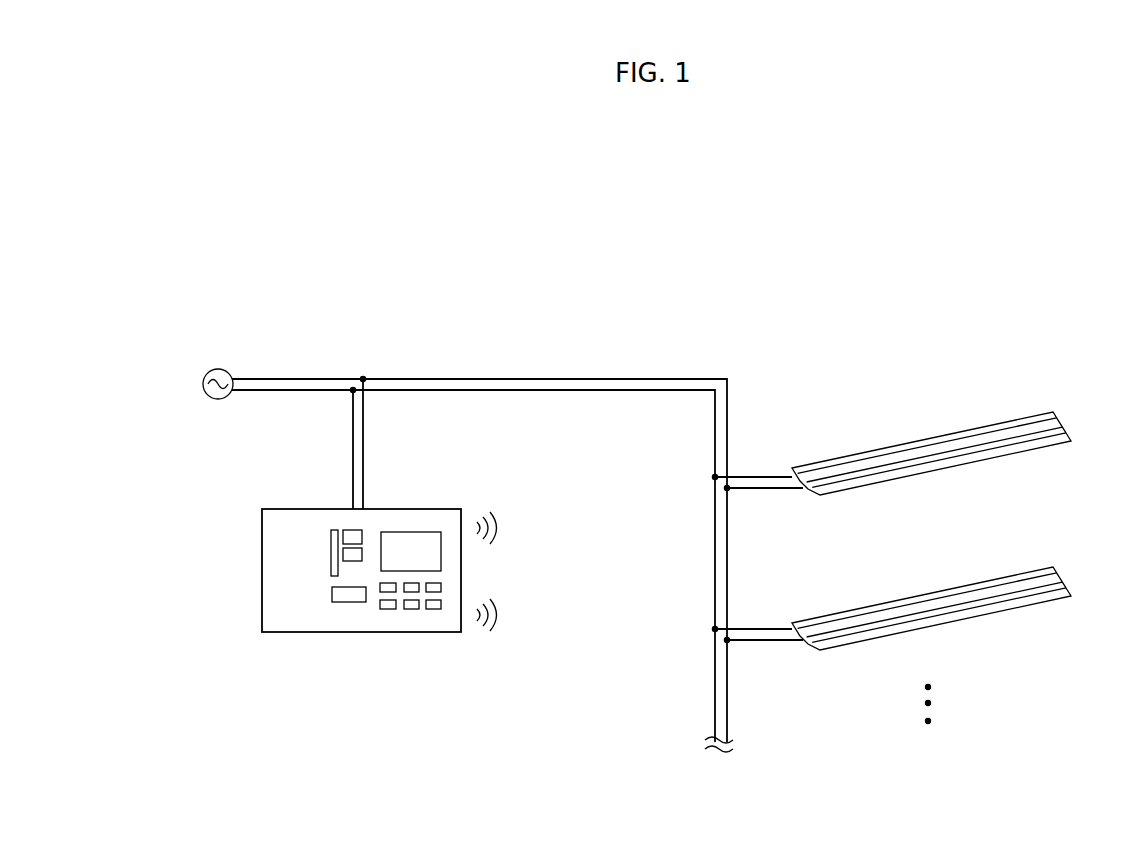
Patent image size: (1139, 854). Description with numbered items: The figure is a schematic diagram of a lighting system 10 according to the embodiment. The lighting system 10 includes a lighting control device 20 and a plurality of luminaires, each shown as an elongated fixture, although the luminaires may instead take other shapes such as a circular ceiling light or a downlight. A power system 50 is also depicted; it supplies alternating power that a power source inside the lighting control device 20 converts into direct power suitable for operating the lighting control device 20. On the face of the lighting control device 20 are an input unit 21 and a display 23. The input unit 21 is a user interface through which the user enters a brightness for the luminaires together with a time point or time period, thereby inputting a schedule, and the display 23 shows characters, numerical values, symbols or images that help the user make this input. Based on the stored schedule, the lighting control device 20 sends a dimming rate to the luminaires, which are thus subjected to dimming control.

The lighting system 10 is at (1008, 305).
The lighting control device 20 is at (266, 614).
The input unit 21 is at (410, 609).
The display 23 is at (410, 538).
The power system 50 is at (208, 398).